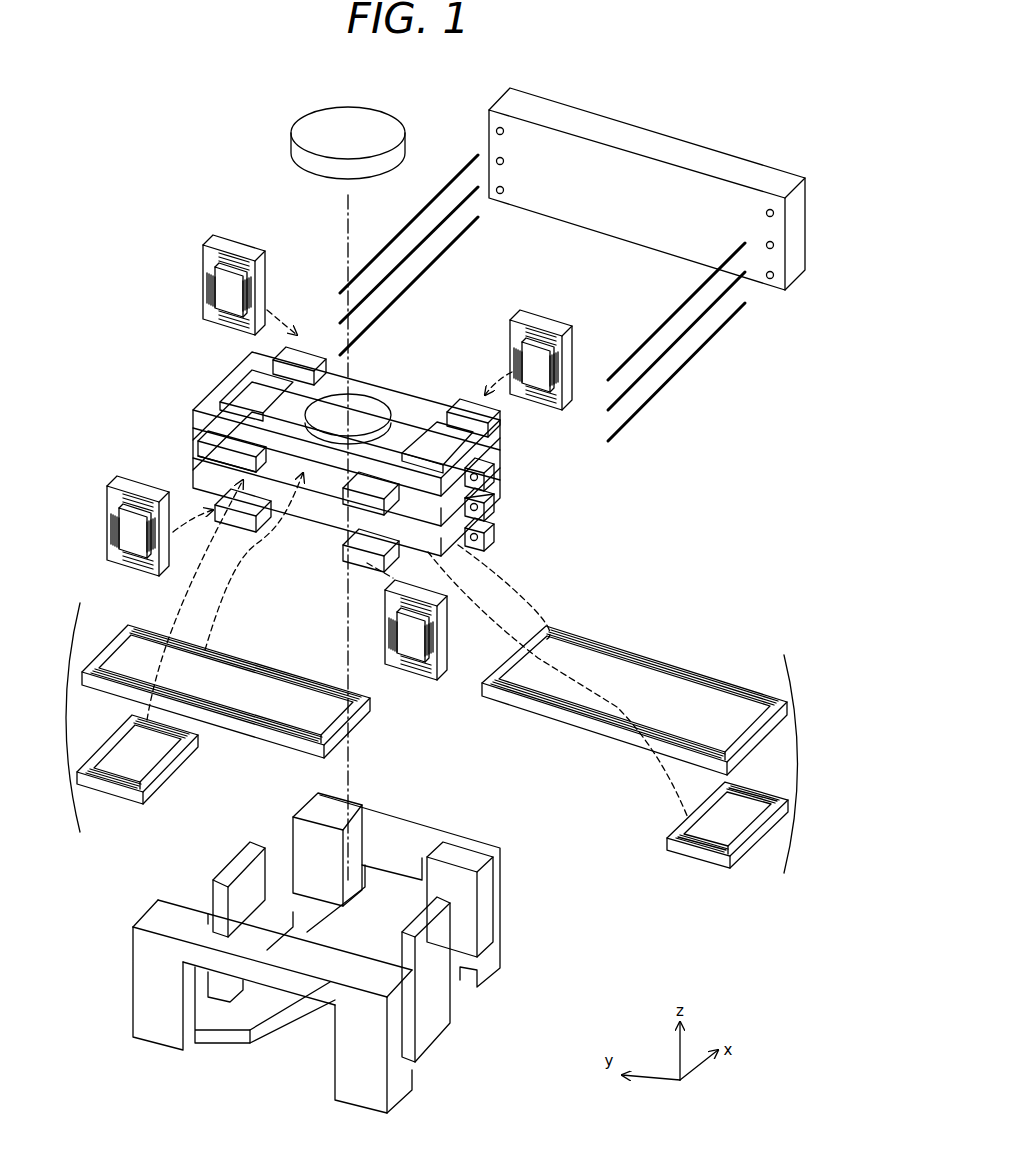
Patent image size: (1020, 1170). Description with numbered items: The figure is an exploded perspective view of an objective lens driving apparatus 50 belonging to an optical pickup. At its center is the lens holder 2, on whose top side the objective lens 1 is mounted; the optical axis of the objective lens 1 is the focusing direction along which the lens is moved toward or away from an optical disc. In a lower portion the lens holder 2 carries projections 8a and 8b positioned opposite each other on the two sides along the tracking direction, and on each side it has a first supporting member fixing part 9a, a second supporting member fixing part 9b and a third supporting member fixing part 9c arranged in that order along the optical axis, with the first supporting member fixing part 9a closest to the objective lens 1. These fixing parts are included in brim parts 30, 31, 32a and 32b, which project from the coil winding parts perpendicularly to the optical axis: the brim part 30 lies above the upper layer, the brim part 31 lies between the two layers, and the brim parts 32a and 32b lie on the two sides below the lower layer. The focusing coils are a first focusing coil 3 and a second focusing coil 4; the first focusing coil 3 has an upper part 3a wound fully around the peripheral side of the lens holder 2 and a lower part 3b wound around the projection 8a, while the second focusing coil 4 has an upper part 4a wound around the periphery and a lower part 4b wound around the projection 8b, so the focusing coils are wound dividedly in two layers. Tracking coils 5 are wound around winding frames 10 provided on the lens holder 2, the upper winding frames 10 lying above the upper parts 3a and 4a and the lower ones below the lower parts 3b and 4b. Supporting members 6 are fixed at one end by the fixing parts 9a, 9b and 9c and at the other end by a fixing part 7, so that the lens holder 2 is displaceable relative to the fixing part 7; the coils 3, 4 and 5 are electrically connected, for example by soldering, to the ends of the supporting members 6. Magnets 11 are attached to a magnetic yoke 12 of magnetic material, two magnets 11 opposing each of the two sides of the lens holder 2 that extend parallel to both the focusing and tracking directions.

The objective lens driving apparatus 50 is at (117, 182).
The objective lens 1 is at (378, 109).
The lens holder 2 is at (242, 367).
The first focusing coil 3 is at (62, 702).
The upper part of the first focusing coil 3a is at (259, 665).
The lower part of the first focusing coil 3b is at (172, 783).
The second focusing coil 4 is at (798, 762).
The upper part of the second focusing coil 4a is at (648, 659).
The lower part of the second focusing coil 4b is at (664, 827).
The tracking coil 5 is at (240, 243).
The supporting member 6 is at (412, 205).
The fixing part 7 is at (679, 142).
The projection 8a is at (200, 460).
The projection 8b is at (356, 529).
The first supporting member fixing part 9a is at (496, 476).
The second supporting member fixing part 9b is at (497, 508).
The third supporting member fixing part 9c is at (497, 538).
The winding frame 10 is at (200, 421).
The magnet 11 is at (302, 812).
The magnetic yoke 12 is at (140, 986).
The brim part 30 is at (502, 423).
The brim part 31 is at (502, 461).
The brim part 32a is at (197, 464).
The brim part 32b is at (501, 496).